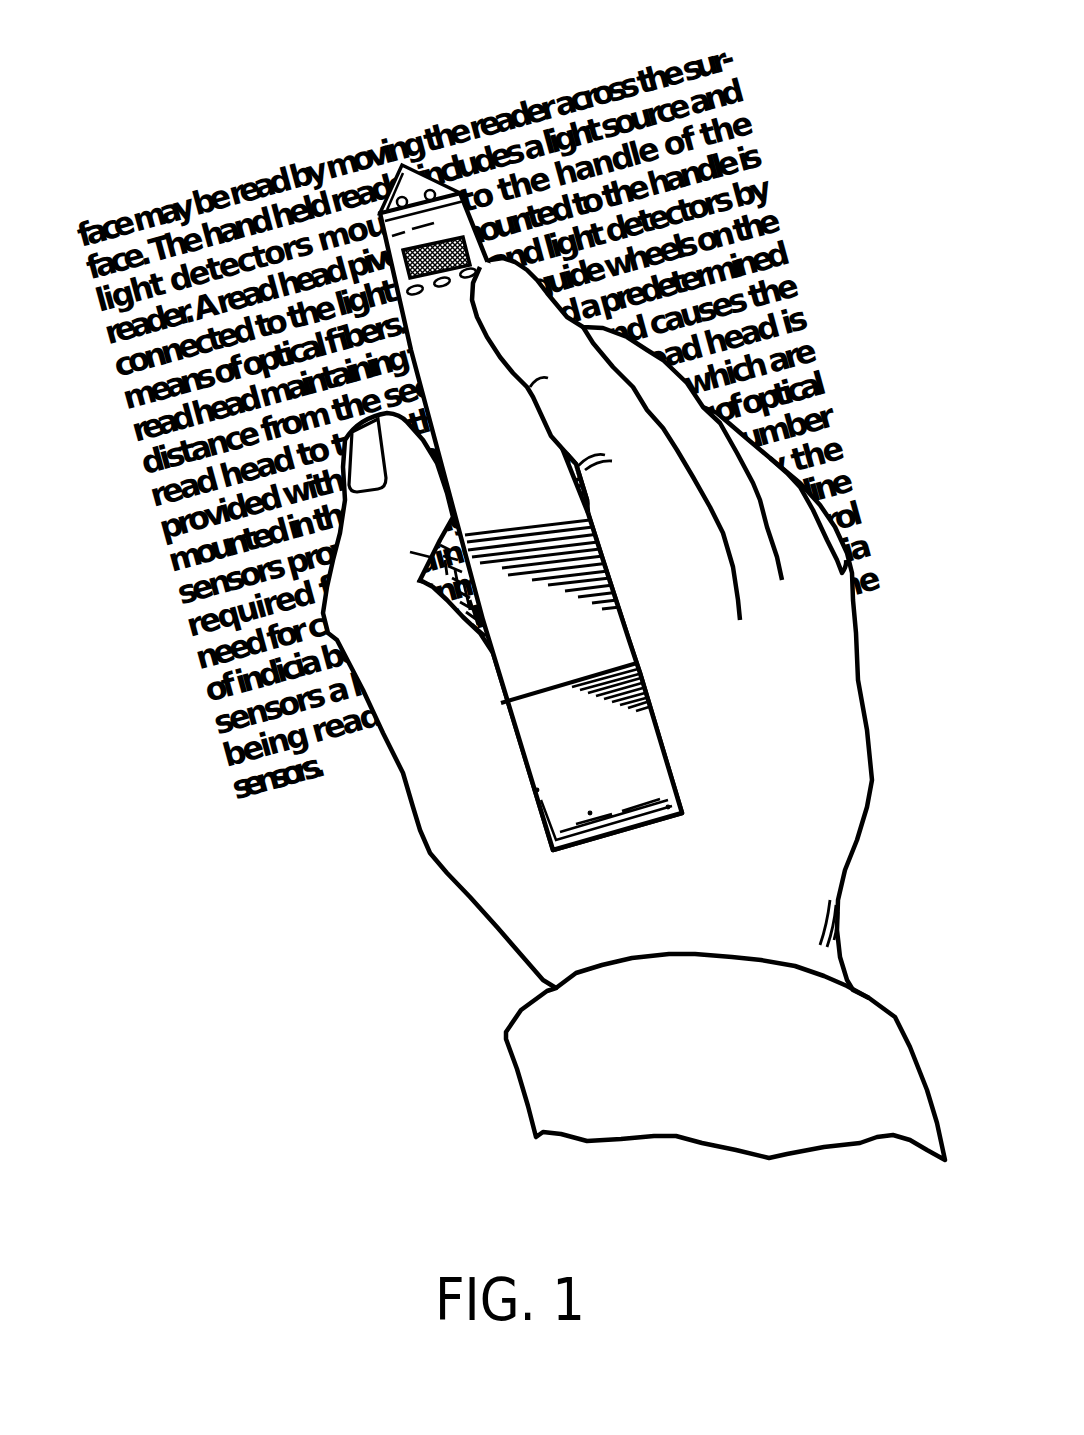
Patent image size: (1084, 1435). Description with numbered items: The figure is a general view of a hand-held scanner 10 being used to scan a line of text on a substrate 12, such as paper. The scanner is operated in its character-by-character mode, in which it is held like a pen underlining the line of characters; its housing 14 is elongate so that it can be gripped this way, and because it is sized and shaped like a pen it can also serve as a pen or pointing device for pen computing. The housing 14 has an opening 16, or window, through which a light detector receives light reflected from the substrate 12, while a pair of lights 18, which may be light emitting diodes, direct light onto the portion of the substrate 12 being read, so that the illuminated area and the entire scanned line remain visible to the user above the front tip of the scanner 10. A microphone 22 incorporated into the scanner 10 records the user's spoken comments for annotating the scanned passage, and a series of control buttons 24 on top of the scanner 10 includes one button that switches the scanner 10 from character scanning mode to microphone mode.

The scanner 10 is at (489, 750).
The substrate 12 is at (396, 85).
The housing 14 is at (507, 657).
The opening 16 is at (400, 166).
The lights 18 is at (430, 188).
The microphone 22 is at (465, 238).
The control buttons 24 is at (416, 294).